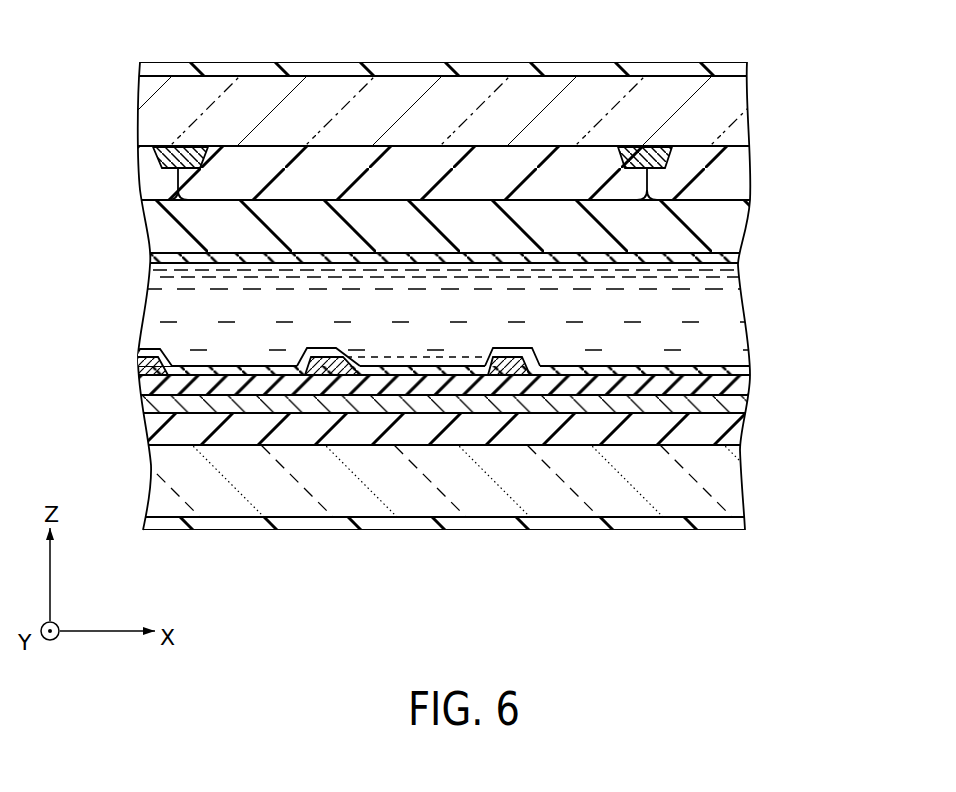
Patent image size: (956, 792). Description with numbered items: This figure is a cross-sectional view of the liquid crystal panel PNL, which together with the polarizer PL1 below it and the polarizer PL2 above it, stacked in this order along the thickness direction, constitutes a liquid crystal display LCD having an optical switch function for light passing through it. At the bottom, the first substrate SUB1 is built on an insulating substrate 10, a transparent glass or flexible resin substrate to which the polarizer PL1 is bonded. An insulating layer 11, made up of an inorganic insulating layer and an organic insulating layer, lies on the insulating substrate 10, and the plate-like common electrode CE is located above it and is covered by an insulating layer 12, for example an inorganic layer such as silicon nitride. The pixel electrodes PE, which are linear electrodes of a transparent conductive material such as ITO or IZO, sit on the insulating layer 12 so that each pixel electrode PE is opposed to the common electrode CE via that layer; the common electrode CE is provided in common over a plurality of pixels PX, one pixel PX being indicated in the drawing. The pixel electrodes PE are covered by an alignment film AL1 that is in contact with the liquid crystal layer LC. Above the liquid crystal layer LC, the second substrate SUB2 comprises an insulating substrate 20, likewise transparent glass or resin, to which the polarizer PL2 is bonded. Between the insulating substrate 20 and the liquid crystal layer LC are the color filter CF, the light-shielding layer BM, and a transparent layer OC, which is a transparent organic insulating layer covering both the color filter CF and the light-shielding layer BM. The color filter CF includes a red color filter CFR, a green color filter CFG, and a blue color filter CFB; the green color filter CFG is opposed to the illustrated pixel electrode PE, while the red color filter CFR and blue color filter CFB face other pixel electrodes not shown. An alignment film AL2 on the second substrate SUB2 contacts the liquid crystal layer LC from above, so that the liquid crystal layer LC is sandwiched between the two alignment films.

The liquid crystal display LCD is at (126, 323).
The liquid crystal panel PNL is at (838, 311).
The second substrate SUB2 is at (764, 187).
The polarizer PL2 is at (740, 67).
The insulating substrate 20 is at (733, 104).
The color filter CF is at (437, 108).
The red color filter CFR is at (150, 171).
The green color filter CFG is at (333, 168).
The blue color filter CFB is at (735, 158).
The light-shielding layer BM is at (180, 152).
The transparent layer OC is at (733, 226).
The alignment film AL2 is at (738, 258).
The liquid crystal layer LC is at (737, 306).
The first substrate SUB1 is at (752, 443).
The alignment film AL1 is at (745, 372).
The pixel electrode PE is at (490, 348).
The insulating layer 12 is at (742, 385).
The common electrode CE is at (745, 402).
The insulating layer 11 is at (742, 430).
The insulating substrate 10 is at (730, 485).
The polarizer PL1 is at (735, 523).
The pixel PX is at (456, 464).